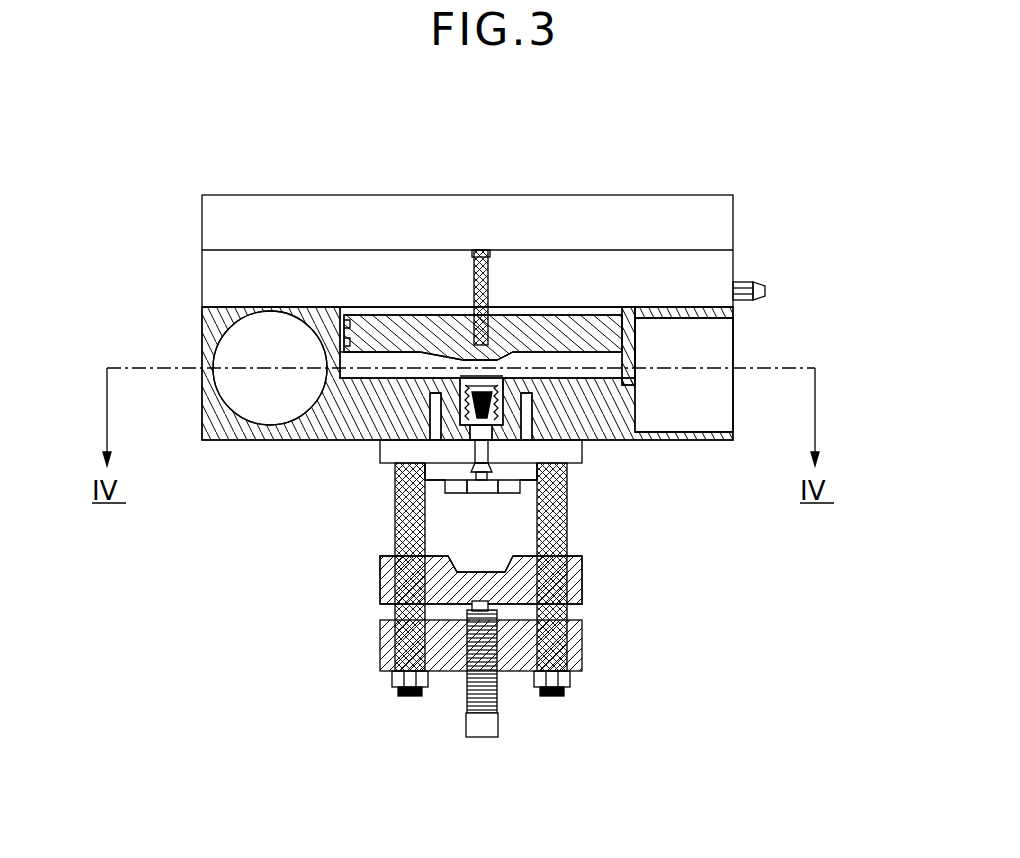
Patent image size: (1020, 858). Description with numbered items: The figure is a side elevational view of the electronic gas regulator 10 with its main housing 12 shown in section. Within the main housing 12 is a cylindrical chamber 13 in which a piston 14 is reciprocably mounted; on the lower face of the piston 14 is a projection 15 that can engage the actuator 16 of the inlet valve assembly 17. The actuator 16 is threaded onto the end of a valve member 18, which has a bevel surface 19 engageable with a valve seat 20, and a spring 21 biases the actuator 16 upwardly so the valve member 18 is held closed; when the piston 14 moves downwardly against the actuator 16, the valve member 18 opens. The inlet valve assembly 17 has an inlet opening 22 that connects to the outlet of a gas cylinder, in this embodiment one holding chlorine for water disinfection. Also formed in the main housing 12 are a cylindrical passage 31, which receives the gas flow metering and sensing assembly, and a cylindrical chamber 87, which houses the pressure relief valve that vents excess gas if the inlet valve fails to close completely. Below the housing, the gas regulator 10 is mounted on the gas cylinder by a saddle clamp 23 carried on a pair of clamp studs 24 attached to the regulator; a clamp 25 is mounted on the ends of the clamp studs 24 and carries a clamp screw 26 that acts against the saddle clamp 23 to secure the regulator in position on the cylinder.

The electronic gas regulator 10 is at (742, 209).
The main housing 12 is at (202, 330).
The cylindrical passage 31 is at (214, 362).
The piston 14 is at (585, 318).
The cylindrical chamber 13 is at (605, 357).
The cylindrical chamber 87 is at (695, 395).
The projection 15 is at (500, 383).
The actuator 16 is at (493, 358).
The spring 21 is at (473, 412).
The valve member 18 is at (466, 465).
The inlet valve assembly 17 is at (447, 496).
The inlet opening 22 is at (482, 493).
The valve seat 20 is at (492, 453).
The bevel surface 19 is at (522, 491).
The clamp studs 24 is at (568, 525).
The saddle clamp 23 is at (582, 584).
The clamp 25 is at (582, 649).
The clamp screw 26 is at (466, 722).